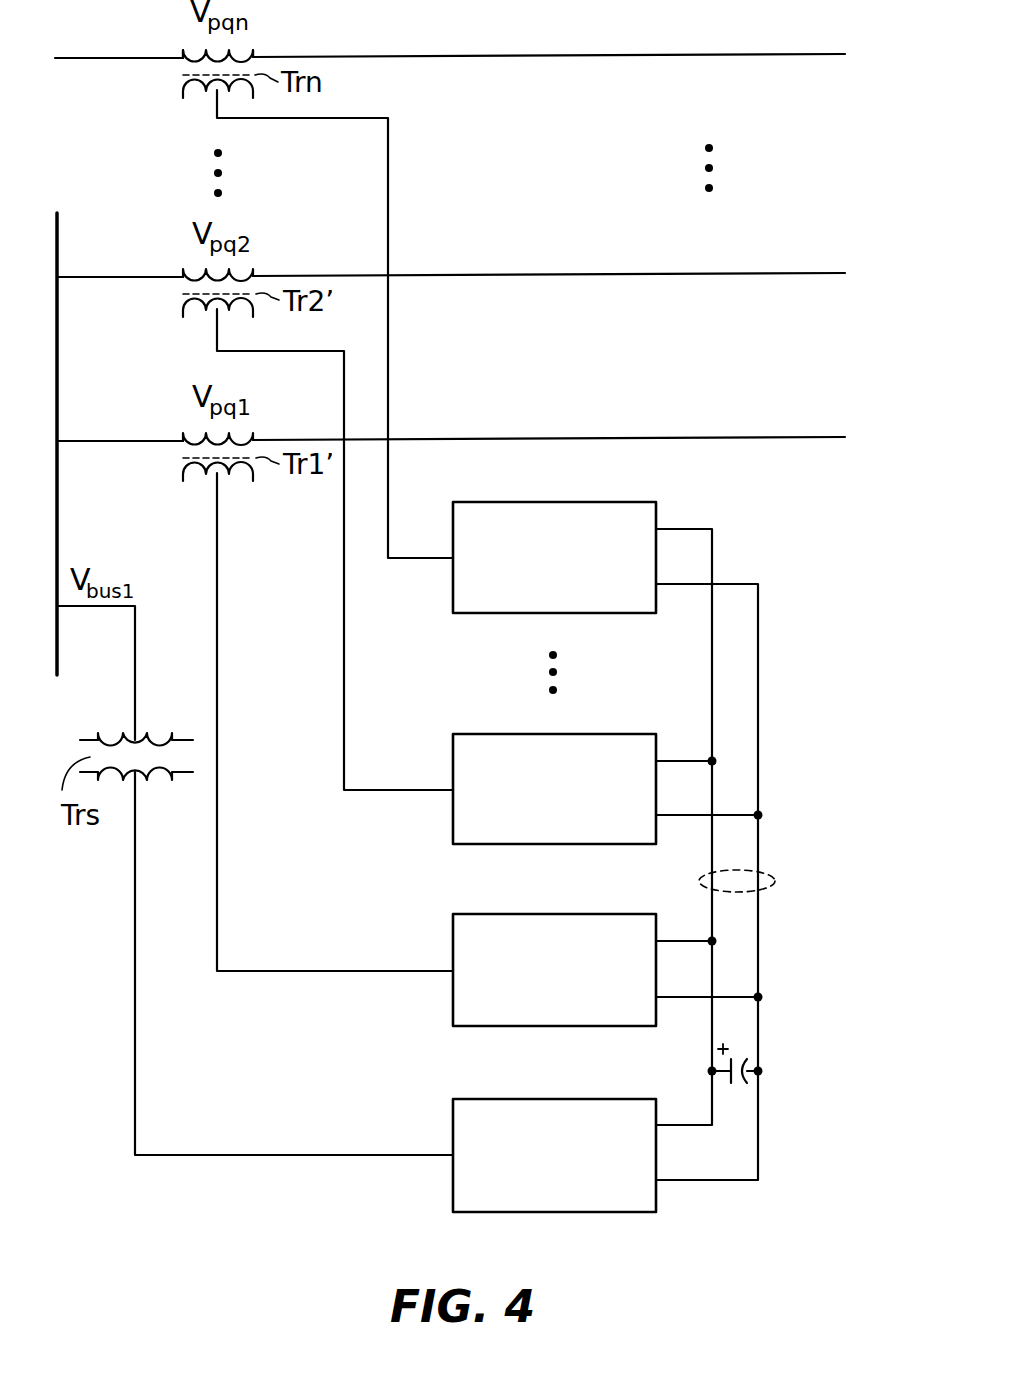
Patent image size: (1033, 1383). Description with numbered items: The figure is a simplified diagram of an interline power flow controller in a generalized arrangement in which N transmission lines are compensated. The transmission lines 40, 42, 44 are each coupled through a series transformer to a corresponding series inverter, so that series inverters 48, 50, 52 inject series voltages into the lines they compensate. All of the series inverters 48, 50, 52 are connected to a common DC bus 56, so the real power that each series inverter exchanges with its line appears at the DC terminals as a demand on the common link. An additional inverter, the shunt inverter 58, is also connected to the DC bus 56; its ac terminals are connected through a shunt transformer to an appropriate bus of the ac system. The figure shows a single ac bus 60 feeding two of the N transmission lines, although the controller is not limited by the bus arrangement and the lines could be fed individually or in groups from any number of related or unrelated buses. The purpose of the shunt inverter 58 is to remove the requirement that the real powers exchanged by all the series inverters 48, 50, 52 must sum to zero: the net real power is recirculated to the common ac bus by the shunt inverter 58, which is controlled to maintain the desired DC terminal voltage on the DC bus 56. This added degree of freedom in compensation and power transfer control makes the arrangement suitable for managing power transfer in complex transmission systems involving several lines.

The transmission line 40 is at (563, 440).
The transmission line 42 is at (558, 276).
The transmission line 44 is at (551, 57).
The series inverter 48 is at (572, 502).
The series inverter 50 is at (572, 734).
The series inverter 52 is at (572, 914).
The DC bus 56 is at (775, 882).
The shunt inverter 58 is at (572, 1099).
The ac bus 60 is at (57, 513).